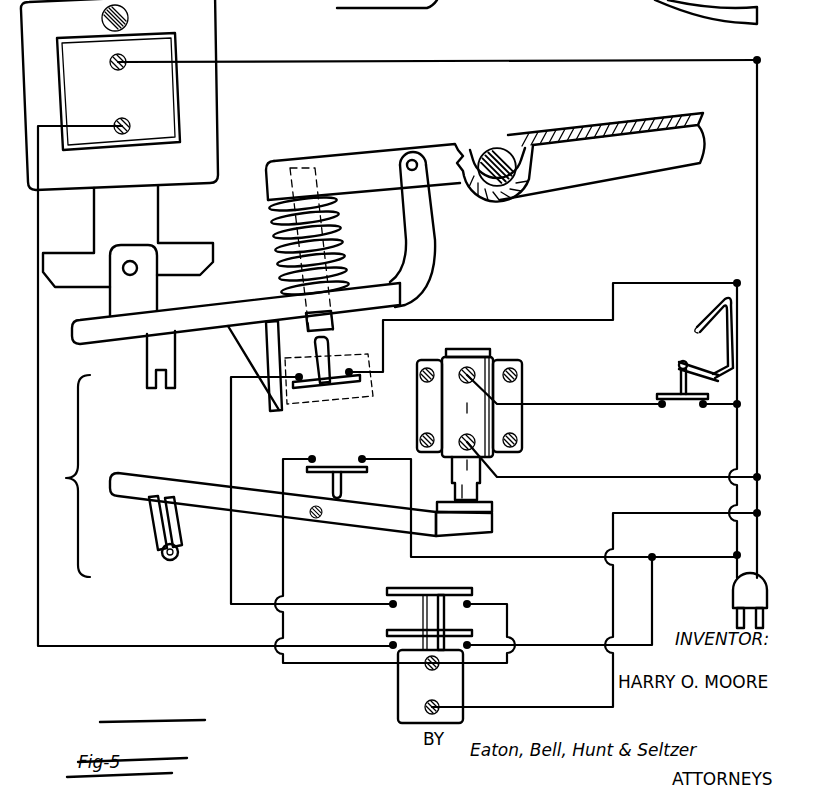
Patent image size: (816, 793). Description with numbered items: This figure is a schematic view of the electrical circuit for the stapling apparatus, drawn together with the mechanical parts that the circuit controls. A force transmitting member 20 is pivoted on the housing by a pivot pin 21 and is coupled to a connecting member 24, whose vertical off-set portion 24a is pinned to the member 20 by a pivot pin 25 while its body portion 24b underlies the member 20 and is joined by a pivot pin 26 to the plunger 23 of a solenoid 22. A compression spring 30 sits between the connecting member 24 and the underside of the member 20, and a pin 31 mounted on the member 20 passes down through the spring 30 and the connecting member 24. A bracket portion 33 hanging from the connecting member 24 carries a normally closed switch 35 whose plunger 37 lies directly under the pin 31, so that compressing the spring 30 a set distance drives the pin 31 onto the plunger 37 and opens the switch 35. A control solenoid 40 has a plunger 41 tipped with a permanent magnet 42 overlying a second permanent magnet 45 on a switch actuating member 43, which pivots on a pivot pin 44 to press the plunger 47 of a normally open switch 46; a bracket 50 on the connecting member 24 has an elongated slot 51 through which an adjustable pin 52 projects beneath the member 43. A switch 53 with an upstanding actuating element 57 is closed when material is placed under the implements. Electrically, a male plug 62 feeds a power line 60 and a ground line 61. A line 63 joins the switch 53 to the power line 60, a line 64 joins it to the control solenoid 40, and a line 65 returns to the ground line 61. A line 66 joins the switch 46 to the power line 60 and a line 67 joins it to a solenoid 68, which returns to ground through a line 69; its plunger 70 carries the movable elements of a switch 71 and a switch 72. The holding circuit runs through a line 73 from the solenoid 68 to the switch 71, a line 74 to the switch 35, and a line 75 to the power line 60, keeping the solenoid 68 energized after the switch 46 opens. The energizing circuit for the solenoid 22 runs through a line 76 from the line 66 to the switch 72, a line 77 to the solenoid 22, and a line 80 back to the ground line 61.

The force transmitting member 20 is at (628, 122).
The pivot pin 21 is at (500, 147).
The solenoid 22 is at (205, 108).
The plunger 23 is at (160, 210).
The connecting member 24 is at (302, 244).
The off-set portion 24a is at (437, 253).
The body portion 24b is at (260, 300).
The pivot pin 25 is at (412, 160).
The pivot pin 26 is at (138, 268).
The compression spring 30 is at (337, 216).
The pin 31 is at (335, 244).
The bracket portion 33 is at (246, 346).
The switch 35 is at (322, 386).
The plunger 37 is at (326, 350).
The control solenoid 40 is at (453, 357).
The plunger 41 is at (453, 468).
The permanent magnet 42 is at (493, 506).
The switch actuating member 43 is at (213, 492).
The pivot pin 44 is at (321, 512).
The second permanent magnet 45 is at (493, 522).
The switch 46 is at (346, 466).
The plunger 47 is at (340, 489).
The bracket 50 is at (148, 358).
The elongated slot 51 is at (160, 388).
The pin 52 is at (172, 560).
The switch 53 is at (663, 394).
The actuating element 57 is at (705, 320).
The power line 60 is at (737, 283).
The ground line 61 is at (757, 228).
The male plug 62 is at (734, 590).
The line 63 is at (737, 406).
The line 64 is at (597, 404).
The line 65 is at (596, 477).
The line 66 is at (590, 557).
The line 67 is at (283, 562).
The solenoid 68 is at (398, 689).
The line 69 is at (568, 707).
The plunger 70 is at (430, 622).
The switch 71 is at (455, 590).
The switch 72 is at (447, 620).
The line 73 is at (507, 664).
The line 74 is at (231, 590).
The line 75 is at (522, 320).
The line 76 is at (585, 645).
The line 77 is at (157, 645).
The line 80 is at (374, 60).